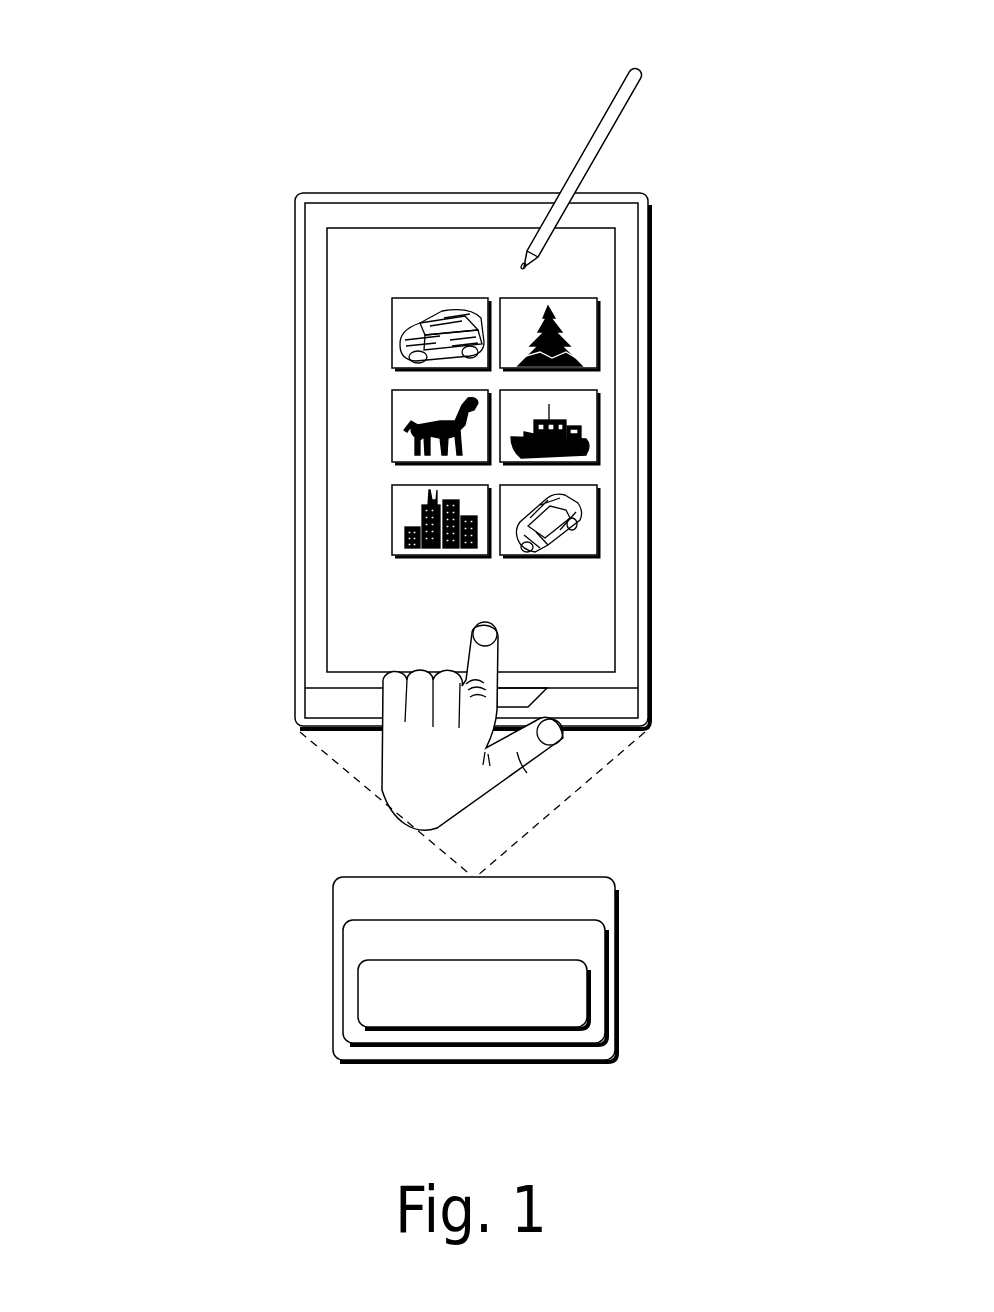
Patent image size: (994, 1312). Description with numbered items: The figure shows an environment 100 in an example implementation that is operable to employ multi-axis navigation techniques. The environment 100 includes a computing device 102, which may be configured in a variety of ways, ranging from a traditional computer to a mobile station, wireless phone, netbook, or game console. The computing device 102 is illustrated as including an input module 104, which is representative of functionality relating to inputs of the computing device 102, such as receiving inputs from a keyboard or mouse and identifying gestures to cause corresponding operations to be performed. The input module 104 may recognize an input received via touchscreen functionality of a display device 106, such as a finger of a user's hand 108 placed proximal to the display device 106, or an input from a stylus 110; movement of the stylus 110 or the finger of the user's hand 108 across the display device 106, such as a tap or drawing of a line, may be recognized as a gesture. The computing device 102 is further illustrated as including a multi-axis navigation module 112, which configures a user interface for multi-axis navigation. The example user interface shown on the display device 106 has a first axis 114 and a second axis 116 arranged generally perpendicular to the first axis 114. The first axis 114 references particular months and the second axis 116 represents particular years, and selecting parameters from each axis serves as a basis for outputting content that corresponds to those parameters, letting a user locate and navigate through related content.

The environment 100 is at (167, 78).
The computing device 102 is at (587, 909).
The input module 104 is at (558, 952).
The display device 106 is at (603, 264).
The user's hand 108 is at (442, 794).
The stylus 110 is at (641, 67).
The multi-axis navigation module 112 is at (532, 1019).
The first axis 114 is at (508, 624).
The second axis 116 is at (280, 328).